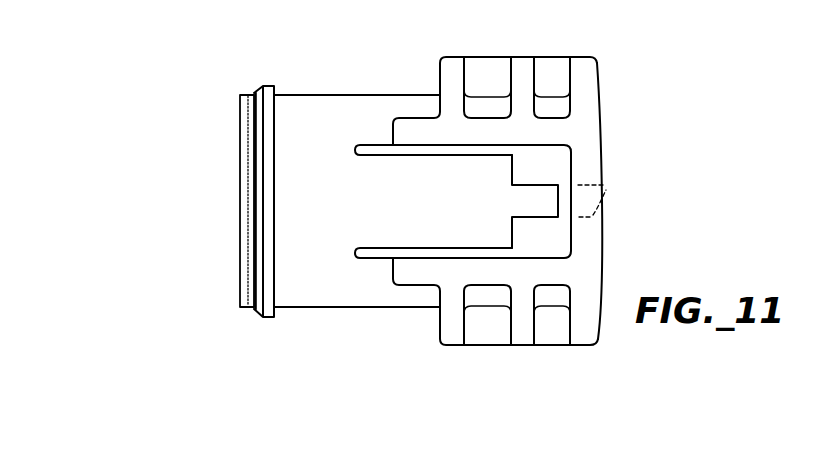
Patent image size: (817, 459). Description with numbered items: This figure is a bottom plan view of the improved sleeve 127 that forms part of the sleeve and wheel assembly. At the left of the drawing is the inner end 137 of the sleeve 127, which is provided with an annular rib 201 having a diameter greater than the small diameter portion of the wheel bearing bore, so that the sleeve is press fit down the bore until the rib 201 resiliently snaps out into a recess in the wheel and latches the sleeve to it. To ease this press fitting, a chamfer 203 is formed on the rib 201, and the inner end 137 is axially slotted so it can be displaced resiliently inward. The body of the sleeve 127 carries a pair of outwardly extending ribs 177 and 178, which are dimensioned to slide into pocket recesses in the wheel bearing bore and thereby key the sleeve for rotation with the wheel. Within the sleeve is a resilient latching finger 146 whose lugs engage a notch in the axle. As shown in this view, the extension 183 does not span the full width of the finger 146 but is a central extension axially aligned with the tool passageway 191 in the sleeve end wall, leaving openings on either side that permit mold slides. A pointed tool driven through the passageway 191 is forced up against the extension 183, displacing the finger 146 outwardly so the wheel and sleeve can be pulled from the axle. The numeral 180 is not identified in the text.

The sleeve 127 is at (317, 74).
The inner end 137 is at (241, 277).
The resilient finger 146 is at (412, 180).
The outwardly extending rib 177 is at (518, 122).
The outwardly extending rib 178 is at (415, 273).
The end wall 180 is at (604, 247).
The extension 183 is at (536, 185).
The tool passageway 191 is at (606, 190).
The annular rib 201 is at (268, 85).
The chamfer 203 is at (257, 143).